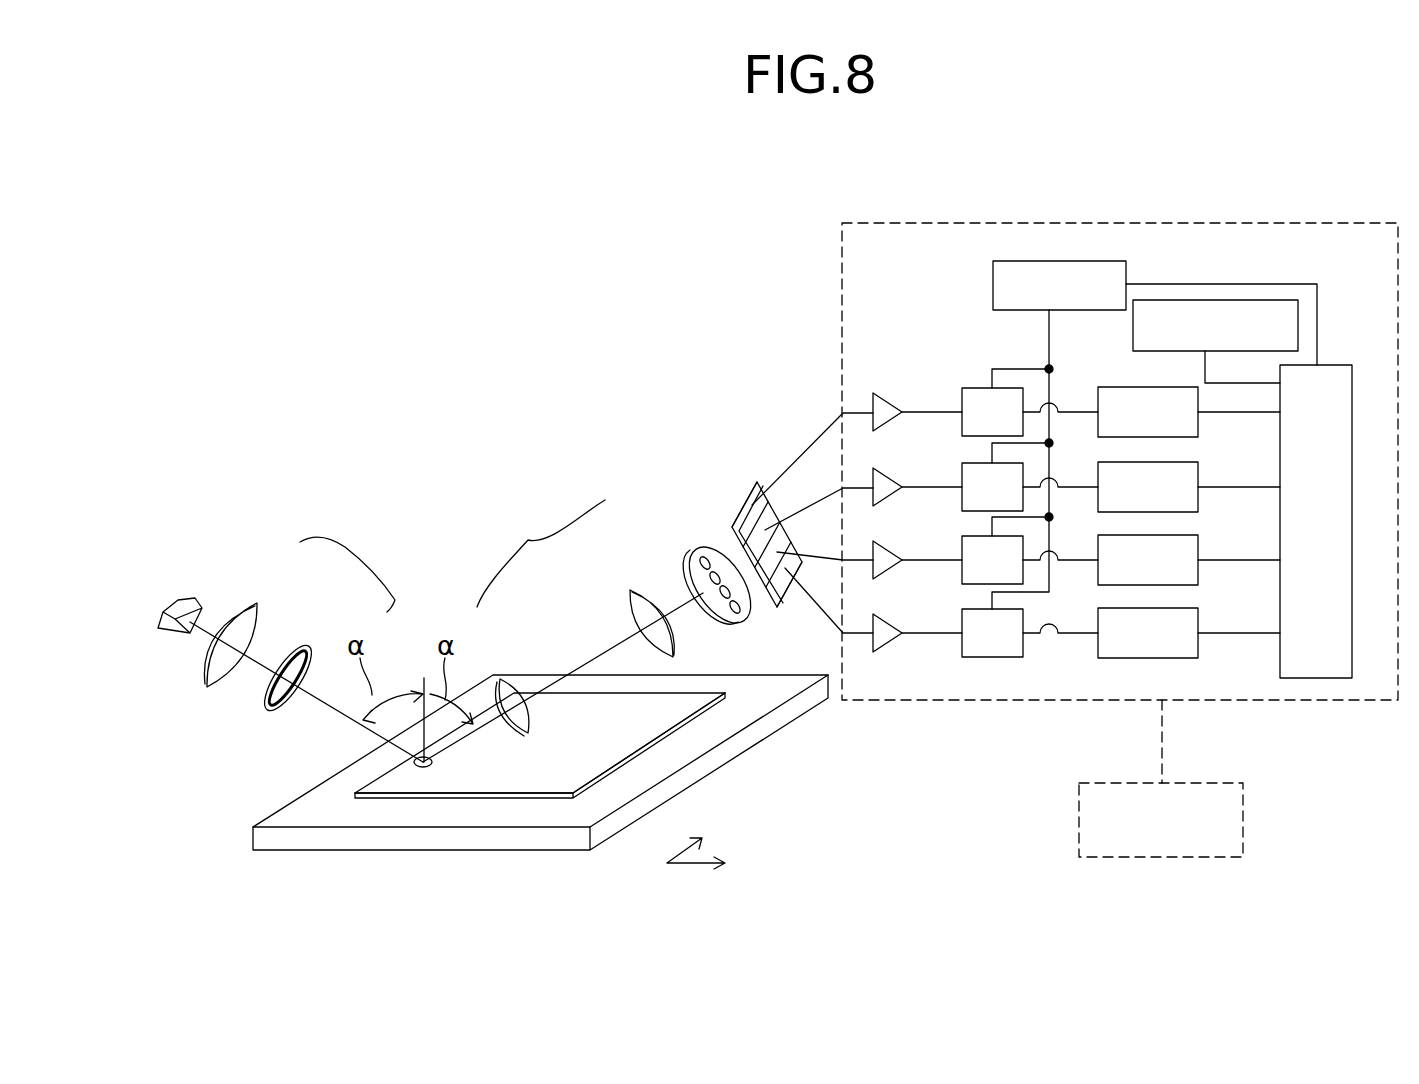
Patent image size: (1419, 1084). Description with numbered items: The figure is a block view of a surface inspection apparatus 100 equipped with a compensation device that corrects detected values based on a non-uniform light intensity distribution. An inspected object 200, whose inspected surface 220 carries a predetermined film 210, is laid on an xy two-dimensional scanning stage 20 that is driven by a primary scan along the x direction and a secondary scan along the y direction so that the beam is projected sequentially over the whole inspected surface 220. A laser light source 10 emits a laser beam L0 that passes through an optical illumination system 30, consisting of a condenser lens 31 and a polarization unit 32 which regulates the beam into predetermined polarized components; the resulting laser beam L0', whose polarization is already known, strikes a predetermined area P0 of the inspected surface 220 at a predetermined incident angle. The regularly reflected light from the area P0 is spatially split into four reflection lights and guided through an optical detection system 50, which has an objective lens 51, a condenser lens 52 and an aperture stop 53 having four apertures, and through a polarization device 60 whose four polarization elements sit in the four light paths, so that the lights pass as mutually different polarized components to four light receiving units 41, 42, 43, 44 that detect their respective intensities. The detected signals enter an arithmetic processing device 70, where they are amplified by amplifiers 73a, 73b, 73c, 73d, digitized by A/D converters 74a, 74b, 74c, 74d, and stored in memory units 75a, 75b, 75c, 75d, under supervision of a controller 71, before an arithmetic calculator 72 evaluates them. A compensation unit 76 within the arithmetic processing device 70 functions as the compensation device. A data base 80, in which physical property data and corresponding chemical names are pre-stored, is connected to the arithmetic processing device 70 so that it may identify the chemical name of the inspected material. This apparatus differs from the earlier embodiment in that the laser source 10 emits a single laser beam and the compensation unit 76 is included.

The surface inspection apparatus 100 is at (698, 249).
The laser light source 10 is at (190, 598).
The xy 2 dimensional scanning stage 20 is at (380, 838).
The optical illumination system 30 is at (299, 618).
The condenser lens 31 is at (263, 607).
The polarization unit 32 is at (307, 647).
The light receiving unit 41 is at (748, 563).
The light receiving unit 42 is at (760, 607).
The light receiving unit 43 is at (738, 562).
The light receiving unit 44 is at (740, 503).
The optical detection system 50 is at (937, 510).
The objective lens 51 is at (500, 680).
The condenser lens 52 is at (630, 592).
The aperture stop 53 is at (681, 594).
The polarization device 60 is at (712, 616).
The arithmetic processing device 70 is at (925, 222).
The controller 71 is at (993, 290).
The arithmetic calculator 72 is at (1335, 365).
The amplifier 73a is at (885, 638).
The amplifier 73b is at (866, 548).
The amplifier 73c is at (868, 476).
The amplifier 73d is at (858, 405).
The A/D converter 74a is at (960, 614).
The A/D converter 74b is at (960, 541).
The A/D converter 74c is at (960, 468).
The A/D converter 74d is at (960, 393).
The memory unit 75a is at (1175, 607).
The memory unit 75b is at (1175, 534).
The memory unit 75c is at (1175, 461).
The memory unit 75d is at (1145, 386).
The compensation unit 76 is at (1180, 300).
The data base 80 is at (1243, 820).
The inspected object 200 is at (642, 770).
The predetermined film 210 is at (523, 795).
The inspected surface 220 is at (576, 756).
The predetermined area P0 is at (433, 768).
The laser beam L0 is at (278, 692).
The laser beam L0' is at (478, 682).